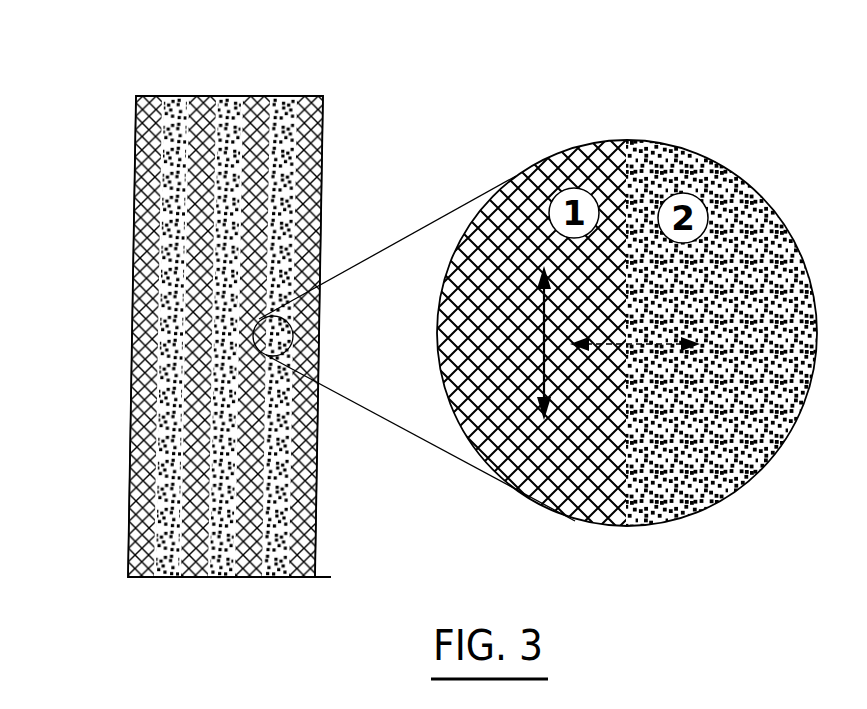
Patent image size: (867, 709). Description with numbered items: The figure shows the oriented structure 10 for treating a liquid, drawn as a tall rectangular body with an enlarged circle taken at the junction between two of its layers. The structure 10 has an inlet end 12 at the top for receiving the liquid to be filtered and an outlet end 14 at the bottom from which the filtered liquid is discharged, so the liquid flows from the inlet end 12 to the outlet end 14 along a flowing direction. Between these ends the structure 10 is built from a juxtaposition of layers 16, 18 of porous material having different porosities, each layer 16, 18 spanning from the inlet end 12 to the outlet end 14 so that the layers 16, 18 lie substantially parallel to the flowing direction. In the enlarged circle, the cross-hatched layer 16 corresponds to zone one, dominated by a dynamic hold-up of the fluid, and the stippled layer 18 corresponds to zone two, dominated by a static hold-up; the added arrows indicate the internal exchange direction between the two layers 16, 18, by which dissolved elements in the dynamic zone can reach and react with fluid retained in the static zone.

The oriented structure 10 is at (96, 192).
The inlet end 12 is at (161, 68).
The outlet end 14 is at (198, 588).
The layer of porous material 16 is at (508, 287).
The layer of porous material 18 is at (757, 198).